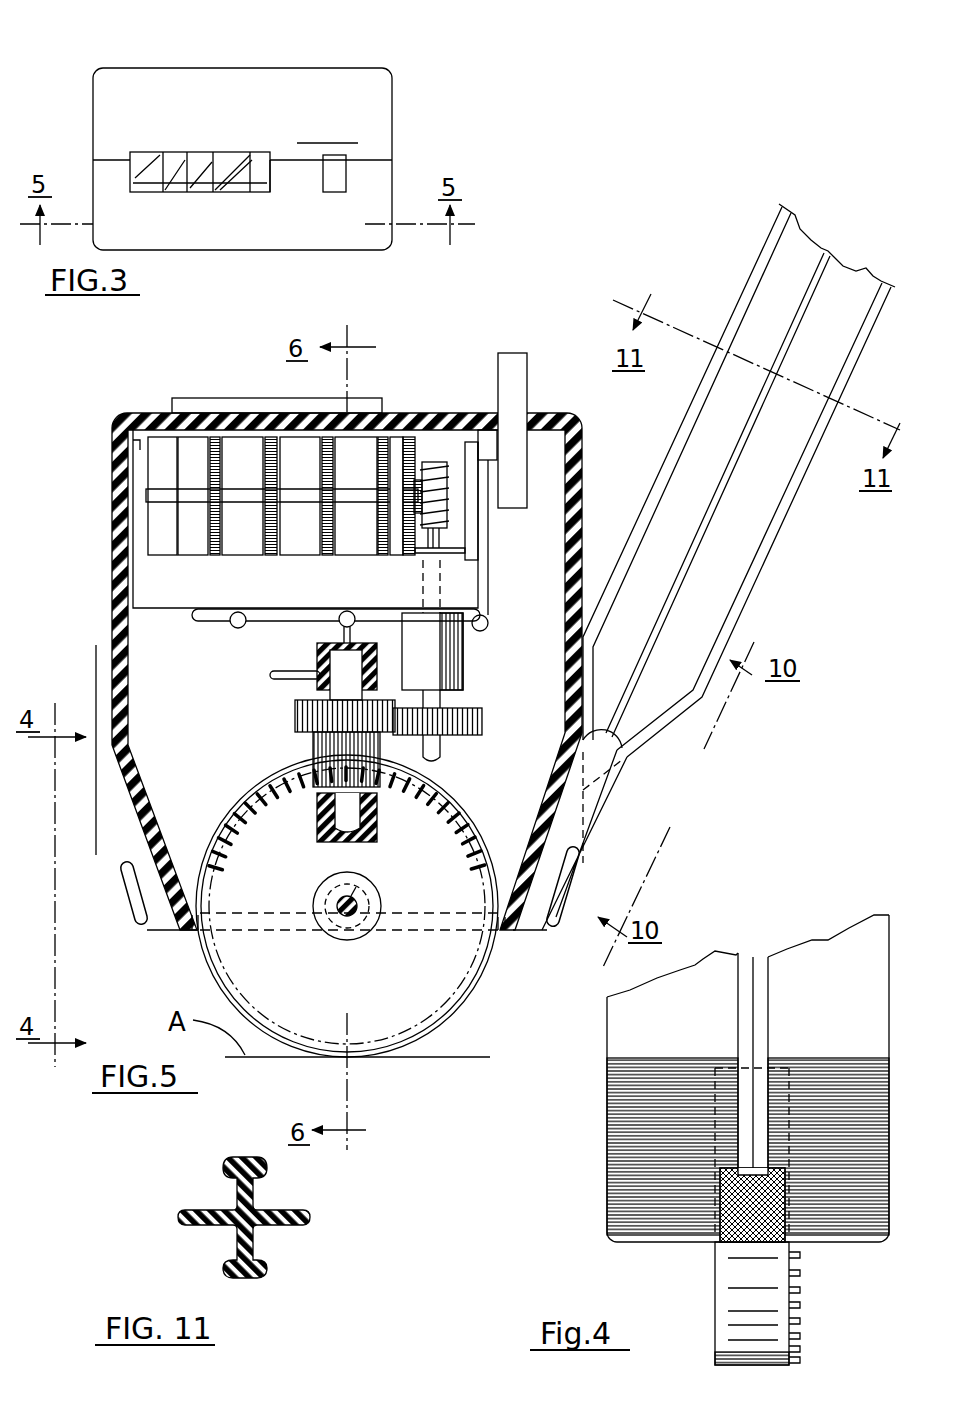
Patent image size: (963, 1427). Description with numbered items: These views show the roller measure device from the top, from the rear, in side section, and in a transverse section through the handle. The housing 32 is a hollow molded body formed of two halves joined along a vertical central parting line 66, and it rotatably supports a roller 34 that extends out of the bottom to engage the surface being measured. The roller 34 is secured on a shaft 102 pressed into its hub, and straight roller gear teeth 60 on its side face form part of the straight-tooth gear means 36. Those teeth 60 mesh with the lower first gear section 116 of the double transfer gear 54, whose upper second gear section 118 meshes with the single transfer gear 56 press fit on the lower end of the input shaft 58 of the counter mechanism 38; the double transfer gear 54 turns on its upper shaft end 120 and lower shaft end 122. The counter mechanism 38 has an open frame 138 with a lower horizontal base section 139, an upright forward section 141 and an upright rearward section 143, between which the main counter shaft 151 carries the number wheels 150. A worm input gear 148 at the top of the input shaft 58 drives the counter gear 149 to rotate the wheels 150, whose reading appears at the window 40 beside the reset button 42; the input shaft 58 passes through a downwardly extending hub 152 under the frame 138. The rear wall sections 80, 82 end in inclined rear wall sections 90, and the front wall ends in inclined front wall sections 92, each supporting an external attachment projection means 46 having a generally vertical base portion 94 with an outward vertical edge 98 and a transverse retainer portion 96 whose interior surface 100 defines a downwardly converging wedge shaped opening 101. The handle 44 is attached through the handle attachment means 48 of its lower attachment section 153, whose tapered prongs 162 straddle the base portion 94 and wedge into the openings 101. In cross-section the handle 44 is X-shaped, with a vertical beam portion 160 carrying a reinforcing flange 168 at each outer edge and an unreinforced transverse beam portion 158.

In FIG. 3, the housing 32 is at (296, 66).
In FIG. 5, the housing 32 is at (126, 410).
In FIG. 4, the housing 32 is at (826, 917).
In FIG. 5, the roller 34 is at (356, 906).
In FIG. 4, the roller 34 is at (769, 1303).
In FIG. 5, the straight-tooth gear means 36 is at (285, 722).
In FIG. 5, the counter mechanism 38 is at (190, 588).
In FIG. 3, the window 40 is at (197, 150).
In FIG. 5, the window 40 is at (208, 396).
In FIG. 3, the button 42 is at (335, 178).
In FIG. 5, the button 42 is at (512, 352).
In FIG. 5, the handle 44 is at (802, 203).
In FIG. 5, the external attachment projection means 46 is at (557, 915).
In FIG. 4, the external attachment projection means 46 is at (772, 1220).
In FIG. 5, the handle attachment means 48 is at (612, 810).
In FIG. 5, the double transfer gear 54 is at (297, 740).
In FIG. 5, the single transfer gear 56 is at (488, 725).
In FIG. 5, the input shaft 58 is at (440, 755).
In FIG. 5, the roller gear teeth 60 is at (448, 810).
In FIG. 4, the roller gear teeth 60 is at (802, 1290).
In FIG. 3, the parting line 66 is at (282, 160).
In FIG. 4, the parting line 66 is at (755, 974).
In FIG. 4, the rear wall section 80 is at (862, 978).
In FIG. 4, the rear wall section 82 is at (722, 975).
In FIG. 5, the inclined rear wall sections 90 is at (130, 798).
In FIG. 4, the inclined rear wall sections 90 is at (667, 1083).
In FIG. 5, the inclined front wall sections 92 is at (545, 808).
In FIG. 4, the inclined front wall sections 92 is at (841, 1083).
In FIG. 5, the base portion 94 is at (150, 867).
In FIG. 4, the base portion 94 is at (739, 1223).
In FIG. 5, the retainer portion 96 is at (122, 908).
In FIG. 4, the retainer portion 96 is at (730, 1198).
In FIG. 5, the outward vertical edge 98 is at (97, 760).
In FIG. 5, the interior surface 100 is at (565, 855).
In FIG. 5, the wedge shaped opening 101 is at (137, 857).
In FIG. 5, the shaft 102 is at (370, 897).
In FIG. 5, the first gear section 116 is at (382, 795).
In FIG. 5, the second gear section 118 is at (300, 698).
In FIG. 5, the upper shaft end 120 is at (355, 640).
In FIG. 5, the lower shaft end 122 is at (322, 828).
In FIG. 5, the frame 138 is at (150, 588).
In FIG. 5, the lower horizontal base section 139 is at (290, 606).
In FIG. 5, the upright forward section 141 is at (140, 448).
In FIG. 5, the upright rearward section 143 is at (470, 605).
In FIG. 5, the worm input gear 148 is at (432, 460).
In FIG. 5, the counter gear 149 is at (448, 500).
In FIG. 3, the number wheels 150 is at (172, 190).
In FIG. 5, the number wheels 150 is at (372, 430).
In FIG. 5, the main counter shaft 151 is at (160, 496).
In FIG. 5, the hub 152 is at (462, 657).
In FIG. 5, the lower attachment section 153 is at (730, 566).
In FIG. 11, the lower attachment section 153 is at (185, 1245).
In FIG. 5, the transverse beam portion 158 is at (826, 262).
In FIG. 11, the transverse beam portion 158 is at (183, 1213).
In FIG. 5, the vertical beam portion 160 is at (718, 438).
In FIG. 11, the vertical beam portion 160 is at (245, 1190).
In FIG. 5, the tapered prongs 162 is at (517, 937).
In FIG. 5, the reinforcing flange 168 is at (747, 280).
In FIG. 11, the reinforcing flange 168 is at (230, 1162).